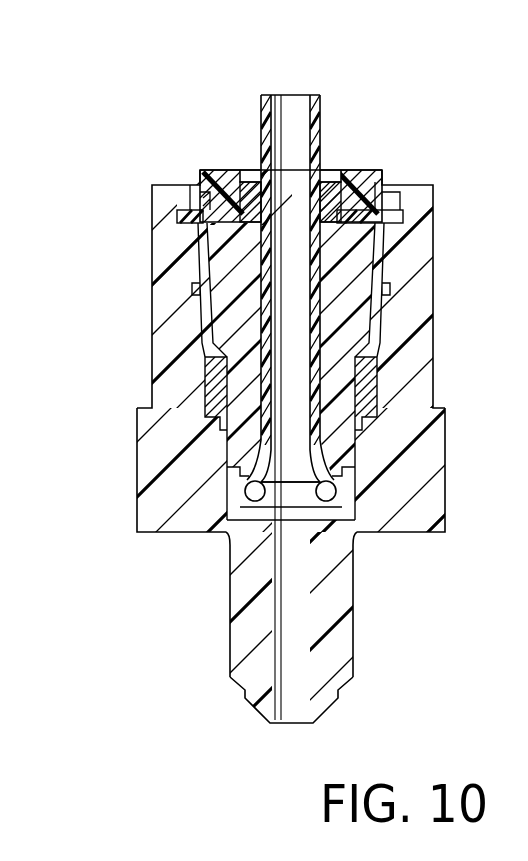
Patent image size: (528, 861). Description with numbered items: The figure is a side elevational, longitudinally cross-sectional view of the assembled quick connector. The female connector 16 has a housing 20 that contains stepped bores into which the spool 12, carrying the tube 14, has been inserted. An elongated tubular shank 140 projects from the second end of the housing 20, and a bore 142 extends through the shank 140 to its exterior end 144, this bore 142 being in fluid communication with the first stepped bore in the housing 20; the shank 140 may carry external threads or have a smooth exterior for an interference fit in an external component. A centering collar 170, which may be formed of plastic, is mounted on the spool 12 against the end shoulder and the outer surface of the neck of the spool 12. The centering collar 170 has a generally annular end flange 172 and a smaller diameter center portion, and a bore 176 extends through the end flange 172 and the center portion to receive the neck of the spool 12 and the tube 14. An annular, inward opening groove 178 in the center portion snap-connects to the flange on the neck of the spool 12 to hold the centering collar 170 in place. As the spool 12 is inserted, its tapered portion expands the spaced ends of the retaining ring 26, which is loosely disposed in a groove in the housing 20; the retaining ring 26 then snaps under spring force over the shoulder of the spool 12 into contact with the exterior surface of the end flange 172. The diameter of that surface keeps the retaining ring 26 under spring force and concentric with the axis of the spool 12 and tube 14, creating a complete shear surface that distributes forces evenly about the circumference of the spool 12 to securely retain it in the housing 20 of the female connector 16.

The spool 12 is at (213, 248).
The tube 14 is at (255, 121).
The female connector 16 is at (125, 462).
The housing 20 is at (148, 343).
The retaining ring 26 is at (183, 219).
The tubular shank 140 is at (228, 615).
The bore 142 is at (318, 585).
The exterior end 144 is at (268, 725).
The centering collar 170 is at (214, 165).
The end flange 172 is at (382, 168).
The bore 176 is at (332, 168).
The inward opening groove 178 is at (375, 197).